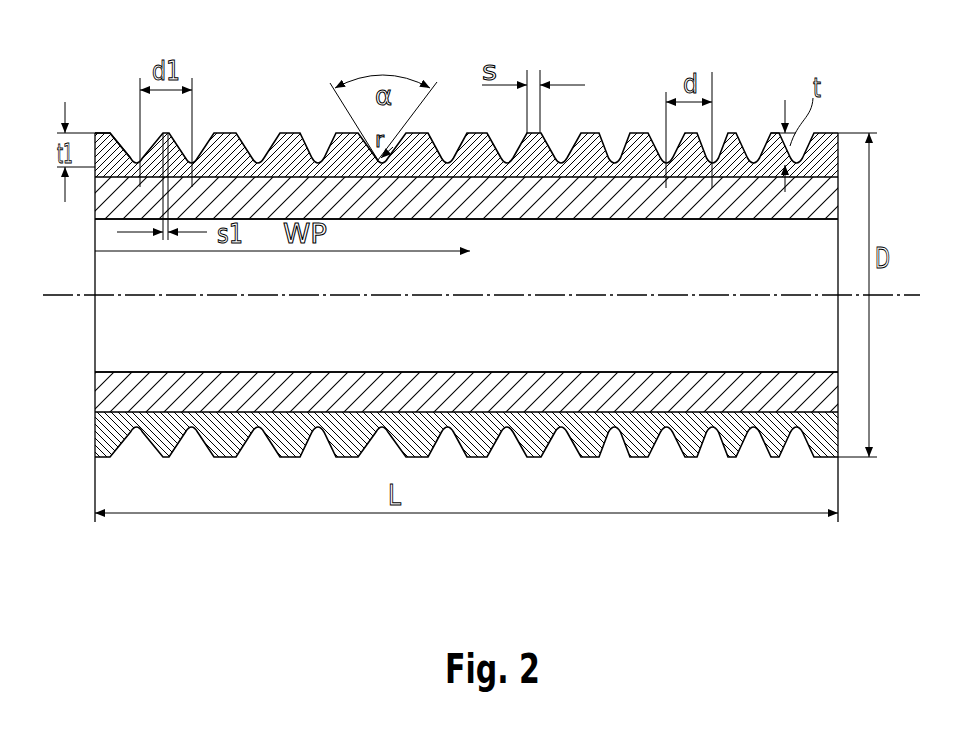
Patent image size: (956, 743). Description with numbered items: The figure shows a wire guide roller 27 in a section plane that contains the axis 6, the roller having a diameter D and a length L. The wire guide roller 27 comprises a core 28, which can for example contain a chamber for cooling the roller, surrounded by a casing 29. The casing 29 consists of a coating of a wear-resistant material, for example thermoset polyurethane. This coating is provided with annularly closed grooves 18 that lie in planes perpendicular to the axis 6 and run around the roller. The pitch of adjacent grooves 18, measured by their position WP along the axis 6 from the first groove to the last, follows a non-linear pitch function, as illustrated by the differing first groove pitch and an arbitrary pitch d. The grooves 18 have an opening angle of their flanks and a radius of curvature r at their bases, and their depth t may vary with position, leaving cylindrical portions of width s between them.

The axis 6 is at (903, 297).
The annularly closed grooves 18 is at (257, 148).
The wire guide roller 27 is at (93, 361).
The core 28 is at (118, 277).
The casing 29 is at (105, 130).